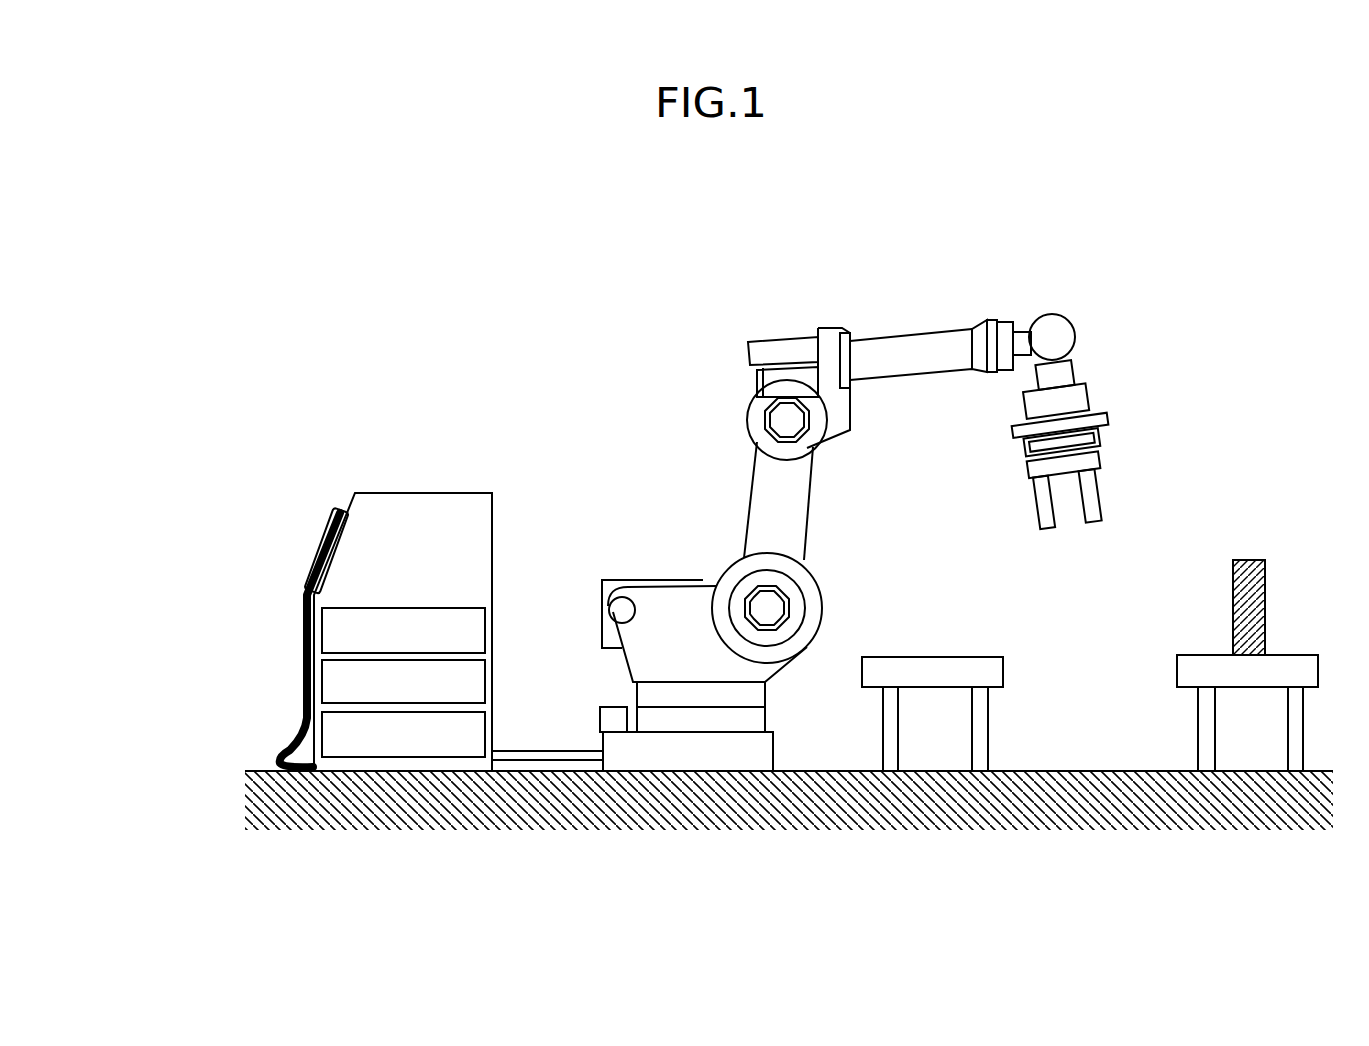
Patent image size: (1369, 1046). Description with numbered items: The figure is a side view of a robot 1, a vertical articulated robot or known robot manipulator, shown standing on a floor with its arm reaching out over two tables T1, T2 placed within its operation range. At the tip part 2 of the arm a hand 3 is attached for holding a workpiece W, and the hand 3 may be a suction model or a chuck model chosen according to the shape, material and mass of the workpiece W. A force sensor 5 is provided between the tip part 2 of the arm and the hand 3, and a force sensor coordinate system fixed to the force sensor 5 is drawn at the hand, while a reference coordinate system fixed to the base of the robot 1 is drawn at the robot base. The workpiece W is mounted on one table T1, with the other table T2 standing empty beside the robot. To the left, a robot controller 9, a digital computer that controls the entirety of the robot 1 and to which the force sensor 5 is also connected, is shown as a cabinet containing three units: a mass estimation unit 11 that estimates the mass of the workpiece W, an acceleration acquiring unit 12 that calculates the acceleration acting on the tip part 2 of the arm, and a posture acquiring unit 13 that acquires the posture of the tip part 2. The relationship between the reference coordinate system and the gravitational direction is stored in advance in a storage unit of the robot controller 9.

The robot 1 is at (812, 305).
The tip part 2 is at (1063, 407).
The hand 3 is at (1037, 503).
The force sensor 5 is at (1103, 417).
The robot controller 9 is at (382, 507).
The mass estimation unit 11 is at (485, 628).
The acceleration acquiring unit 12 is at (252, 678).
The posture acquiring unit 13 is at (485, 738).
The table T1 is at (1198, 728).
The table T2 is at (988, 725).
The workpiece W is at (1267, 590).